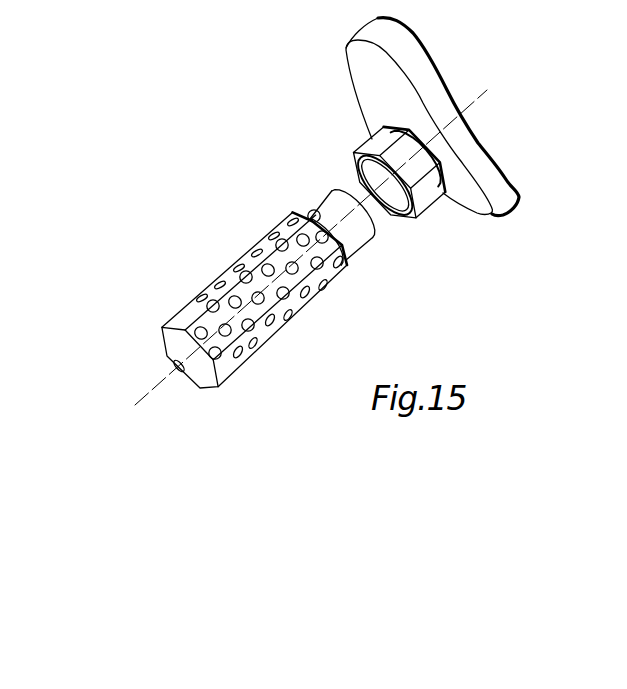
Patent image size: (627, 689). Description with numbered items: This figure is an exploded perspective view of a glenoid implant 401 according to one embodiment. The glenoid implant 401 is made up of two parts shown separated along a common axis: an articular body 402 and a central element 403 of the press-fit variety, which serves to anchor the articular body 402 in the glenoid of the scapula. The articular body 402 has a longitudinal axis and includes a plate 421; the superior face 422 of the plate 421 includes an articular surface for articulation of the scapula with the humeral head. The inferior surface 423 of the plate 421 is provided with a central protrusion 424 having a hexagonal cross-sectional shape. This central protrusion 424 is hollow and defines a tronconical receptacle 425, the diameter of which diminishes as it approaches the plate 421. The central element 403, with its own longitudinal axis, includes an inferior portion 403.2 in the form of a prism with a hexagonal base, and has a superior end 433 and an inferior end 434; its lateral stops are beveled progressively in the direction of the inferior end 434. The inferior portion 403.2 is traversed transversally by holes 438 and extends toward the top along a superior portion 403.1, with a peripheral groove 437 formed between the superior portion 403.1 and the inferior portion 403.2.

The glenoid implant 401 is at (204, 79).
The articular body 402 is at (328, 77).
The central element 403 is at (263, 212).
The superior portion 403.1 is at (364, 239).
The inferior portion 403.2 is at (300, 302).
The plate 421 is at (502, 195).
The superior face 422 is at (489, 135).
The inferior surface 423 is at (483, 206).
The central protrusion 424 is at (427, 203).
The tronconical receptacle 425 is at (397, 201).
The superior end 433 is at (322, 200).
The inferior end 434 is at (174, 350).
The peripheral groove 437 is at (307, 212).
The holes 438 is at (243, 357).